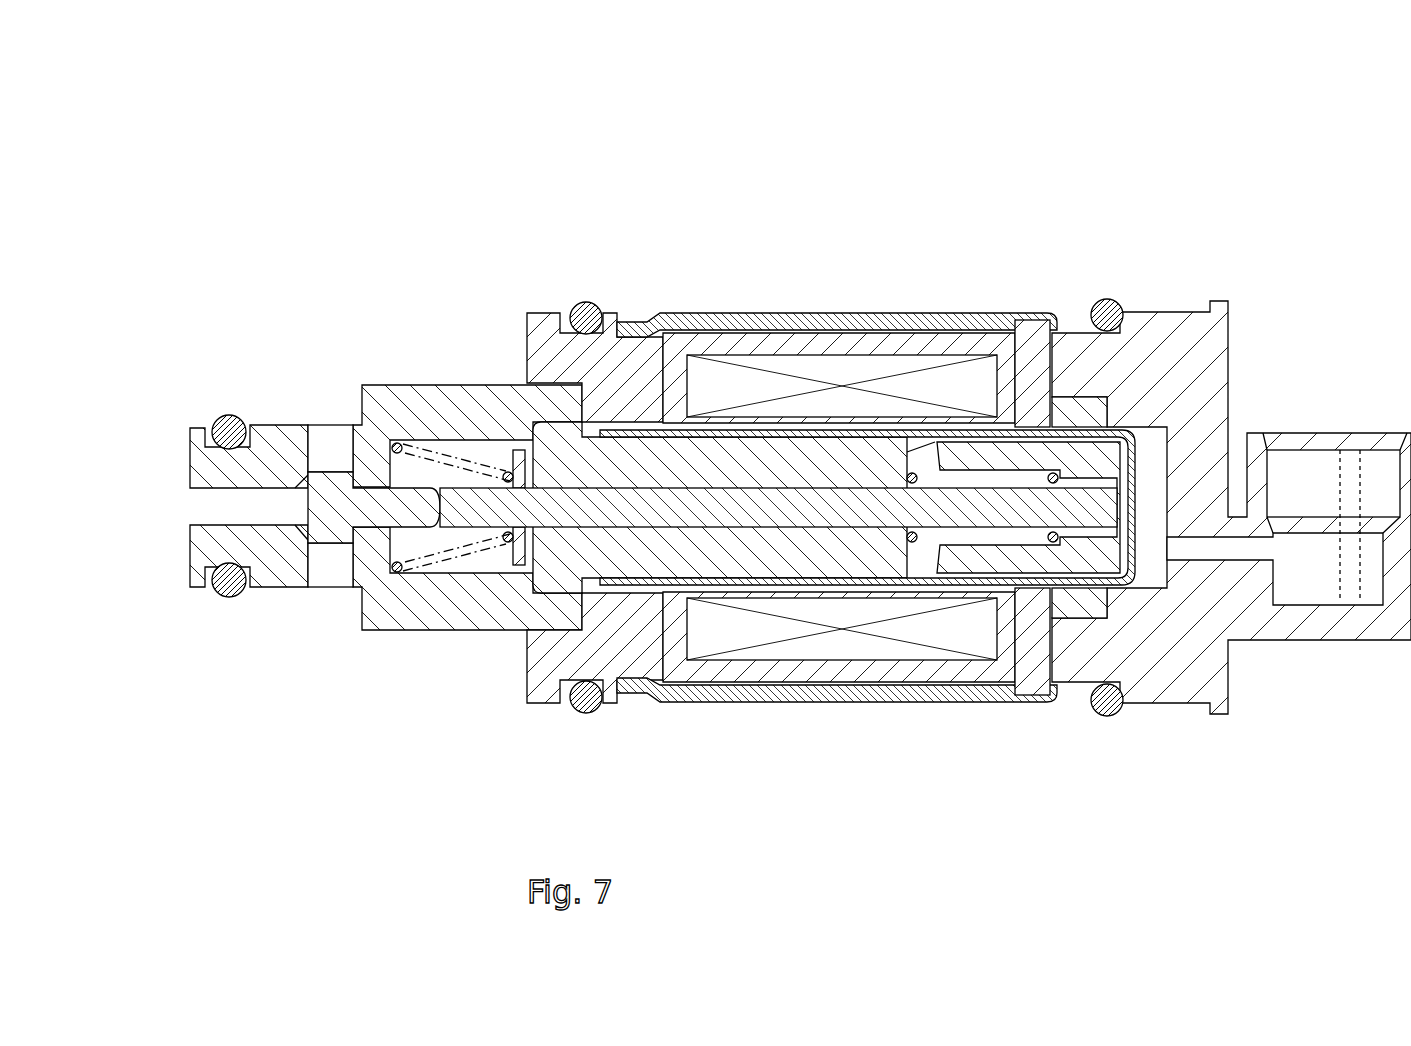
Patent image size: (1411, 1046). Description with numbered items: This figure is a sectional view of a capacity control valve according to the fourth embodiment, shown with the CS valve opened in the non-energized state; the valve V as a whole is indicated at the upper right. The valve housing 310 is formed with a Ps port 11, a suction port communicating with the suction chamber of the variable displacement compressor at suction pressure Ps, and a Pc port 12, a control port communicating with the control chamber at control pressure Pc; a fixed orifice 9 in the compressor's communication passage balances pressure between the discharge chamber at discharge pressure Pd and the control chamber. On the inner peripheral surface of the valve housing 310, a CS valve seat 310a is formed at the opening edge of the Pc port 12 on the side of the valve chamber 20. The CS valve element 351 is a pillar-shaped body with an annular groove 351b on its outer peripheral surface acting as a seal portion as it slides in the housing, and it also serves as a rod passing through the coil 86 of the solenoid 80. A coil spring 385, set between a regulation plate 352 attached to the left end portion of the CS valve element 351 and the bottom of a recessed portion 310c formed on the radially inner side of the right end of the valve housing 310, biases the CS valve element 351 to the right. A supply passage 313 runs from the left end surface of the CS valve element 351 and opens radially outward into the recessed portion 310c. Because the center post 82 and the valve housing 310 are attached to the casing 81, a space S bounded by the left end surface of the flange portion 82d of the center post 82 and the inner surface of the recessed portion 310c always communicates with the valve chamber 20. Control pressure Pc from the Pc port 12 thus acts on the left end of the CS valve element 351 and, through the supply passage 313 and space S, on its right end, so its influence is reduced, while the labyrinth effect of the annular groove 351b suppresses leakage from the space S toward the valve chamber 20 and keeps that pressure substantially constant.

The valve housing 310 is at (197, 424).
The Ps port 11 is at (318, 437).
The valve chamber 20 is at (347, 470).
The supply passage 313 is at (400, 500).
The Pc port 12 is at (190, 492).
The fixed orifice 9 is at (110, 547).
The flange portion 82d is at (587, 302).
The CS valve element 351 is at (752, 475).
The center post 82 is at (840, 428).
The solenoid 80 is at (1162, 304).
The CS valve seat 310a is at (320, 545).
The annular groove 351b is at (397, 568).
The recessed portion 310c is at (376, 528).
The coil spring 385 is at (478, 562).
The regulation plate 352 is at (531, 596).
The casing 81 is at (545, 713).
The coil 86 is at (840, 638).
The space S is at (490, 462).
The valve V is at (1282, 86).
The suction pressure Ps is at (330, 468).
The control pressure Pc is at (188, 508).
The discharge pressure Pd is at (110, 520).